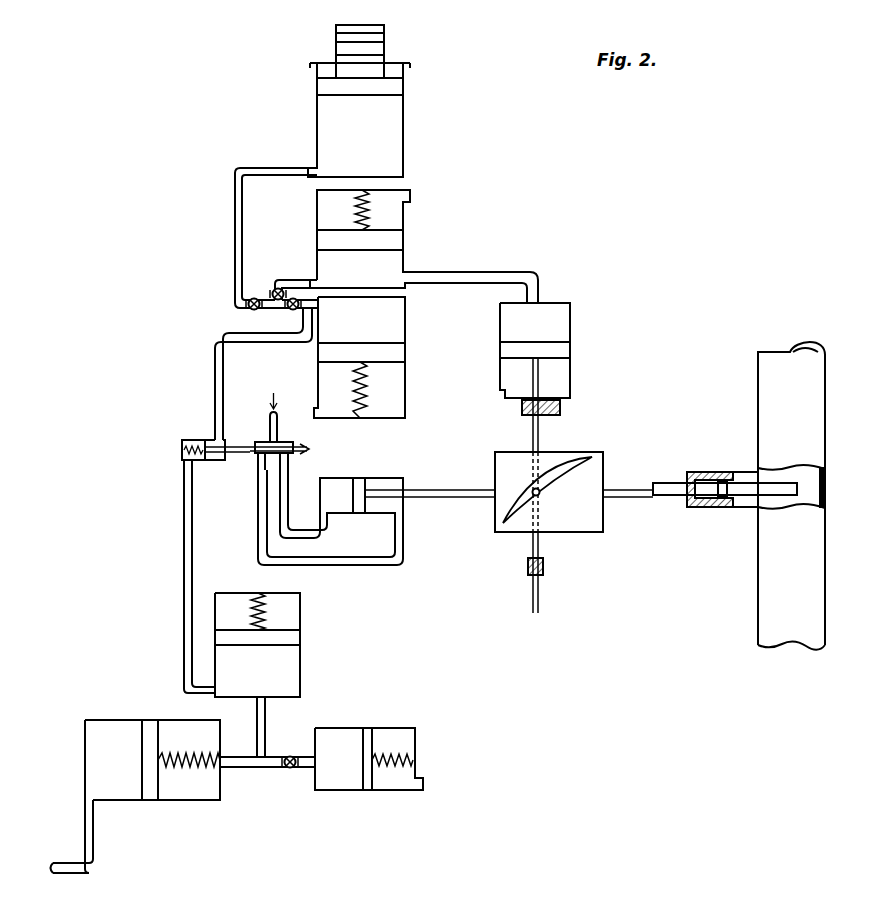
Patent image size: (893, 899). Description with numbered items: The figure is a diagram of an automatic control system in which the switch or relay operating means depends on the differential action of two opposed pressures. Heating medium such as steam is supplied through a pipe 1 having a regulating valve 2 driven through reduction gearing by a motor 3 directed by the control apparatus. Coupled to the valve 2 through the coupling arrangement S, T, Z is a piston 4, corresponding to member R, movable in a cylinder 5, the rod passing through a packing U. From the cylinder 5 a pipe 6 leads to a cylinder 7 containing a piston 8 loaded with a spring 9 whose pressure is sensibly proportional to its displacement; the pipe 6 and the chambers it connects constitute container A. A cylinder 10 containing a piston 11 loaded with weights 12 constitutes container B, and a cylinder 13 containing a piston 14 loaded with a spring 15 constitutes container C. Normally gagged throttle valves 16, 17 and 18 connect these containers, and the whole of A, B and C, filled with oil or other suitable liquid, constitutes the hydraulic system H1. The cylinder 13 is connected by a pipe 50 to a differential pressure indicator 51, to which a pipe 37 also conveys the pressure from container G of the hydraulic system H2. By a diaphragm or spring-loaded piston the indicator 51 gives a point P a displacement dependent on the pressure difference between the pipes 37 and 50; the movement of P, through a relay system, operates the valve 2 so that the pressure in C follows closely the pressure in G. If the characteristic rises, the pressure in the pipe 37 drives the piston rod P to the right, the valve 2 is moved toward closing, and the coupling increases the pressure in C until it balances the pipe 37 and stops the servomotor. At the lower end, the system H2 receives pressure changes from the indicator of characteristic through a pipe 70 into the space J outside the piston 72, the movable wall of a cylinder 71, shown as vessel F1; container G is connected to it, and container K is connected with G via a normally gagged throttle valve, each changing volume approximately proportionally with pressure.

The pipe 1 is at (762, 399).
The regulating valve 2 is at (782, 497).
The motor 3 is at (378, 478).
The piston 4 is at (562, 350).
The cylinder 5 is at (571, 326).
The pipe 6 is at (536, 277).
The cylinder 7 is at (403, 264).
The piston 8 is at (400, 240).
The spring 9 is at (366, 210).
The cylinder 10 is at (403, 134).
The piston 11 is at (400, 91).
The weights 12 is at (384, 33).
The cylinder 13 is at (407, 305).
The piston 14 is at (402, 362).
The spring 15 is at (364, 395).
The normally gagged throttle valve 16 is at (252, 309).
The normally gagged throttle valve 17 is at (275, 288).
The normally gagged throttle valve 18 is at (292, 309).
The pipe 37 is at (184, 610).
The pipe 50 is at (214, 368).
The differential pressure indicator 51 is at (202, 440).
The pipe 70 is at (65, 862).
The cylinder 71 is at (120, 803).
The piston 72 is at (143, 740).
The container A is at (475, 272).
The container B is at (403, 132).
The container C is at (407, 305).
The container G is at (300, 658).
The hydraulic system H1 is at (260, 222).
The hydraulic system H2 is at (145, 683).
The space J is at (118, 806).
The container K is at (344, 730).
The point P is at (287, 431).
The member R is at (539, 381).
The coupling arrangement S is at (587, 528).
The coupling arrangement T is at (572, 470).
The packing U is at (541, 417).
The coupling arrangement Z is at (539, 494).
The cylinder F1 is at (205, 805).